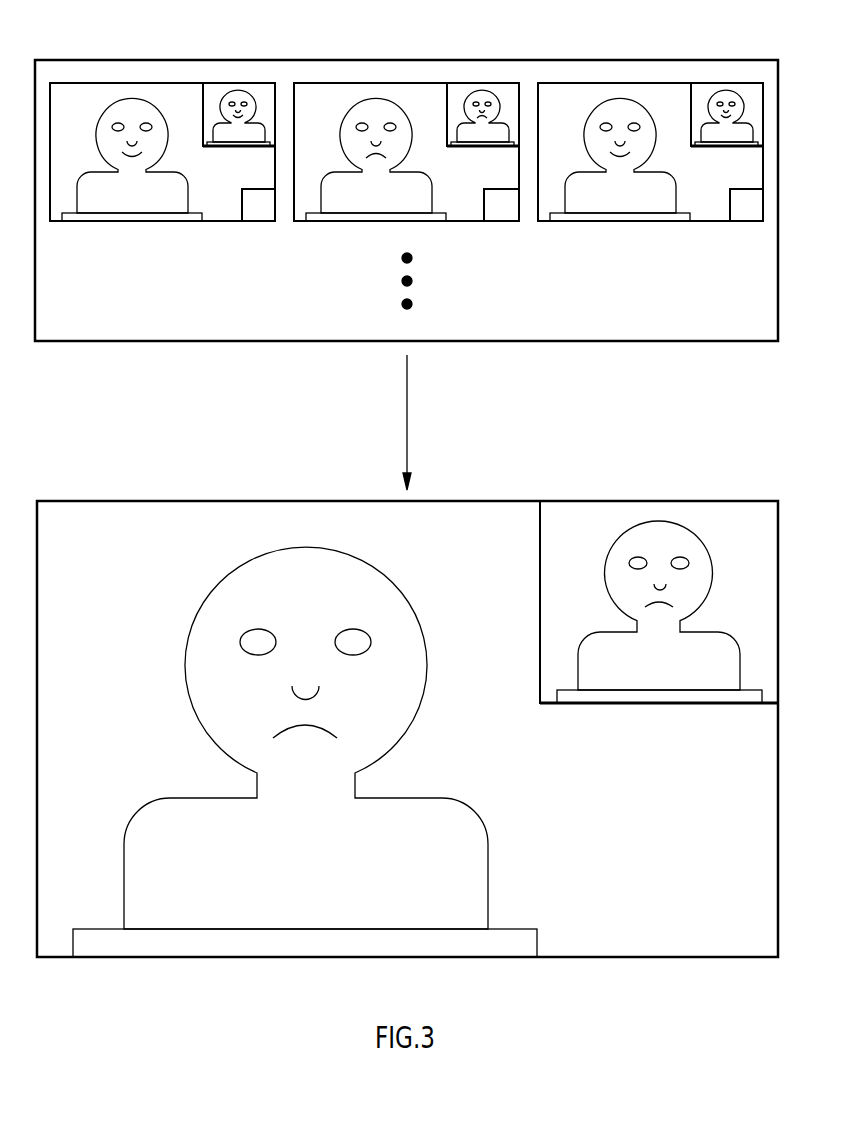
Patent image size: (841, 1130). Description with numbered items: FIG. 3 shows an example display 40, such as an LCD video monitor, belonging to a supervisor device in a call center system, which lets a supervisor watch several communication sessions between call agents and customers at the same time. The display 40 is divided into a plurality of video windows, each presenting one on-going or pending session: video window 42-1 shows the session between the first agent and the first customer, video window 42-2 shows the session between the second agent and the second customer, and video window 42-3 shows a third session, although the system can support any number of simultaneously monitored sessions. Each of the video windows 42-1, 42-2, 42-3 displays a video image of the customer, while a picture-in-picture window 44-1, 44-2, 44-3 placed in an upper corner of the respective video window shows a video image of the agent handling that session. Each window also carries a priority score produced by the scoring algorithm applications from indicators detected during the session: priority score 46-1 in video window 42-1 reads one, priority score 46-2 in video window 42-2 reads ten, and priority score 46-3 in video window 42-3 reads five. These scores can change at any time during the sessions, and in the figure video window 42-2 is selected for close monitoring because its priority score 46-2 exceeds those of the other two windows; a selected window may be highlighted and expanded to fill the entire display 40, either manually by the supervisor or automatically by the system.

The display 40 is at (108, 342).
The video window 42-1 is at (74, 100).
The video window 42-2 is at (318, 100).
The video window 42-3 is at (562, 100).
The picture-in-picture window 44-1 is at (262, 97).
The picture-in-picture window 44-2 is at (507, 97).
The picture-in-picture window 44-3 is at (751, 97).
The priority score 46-1 is at (253, 216).
The priority score 46-2 is at (493, 216).
The priority score 46-3 is at (738, 216).